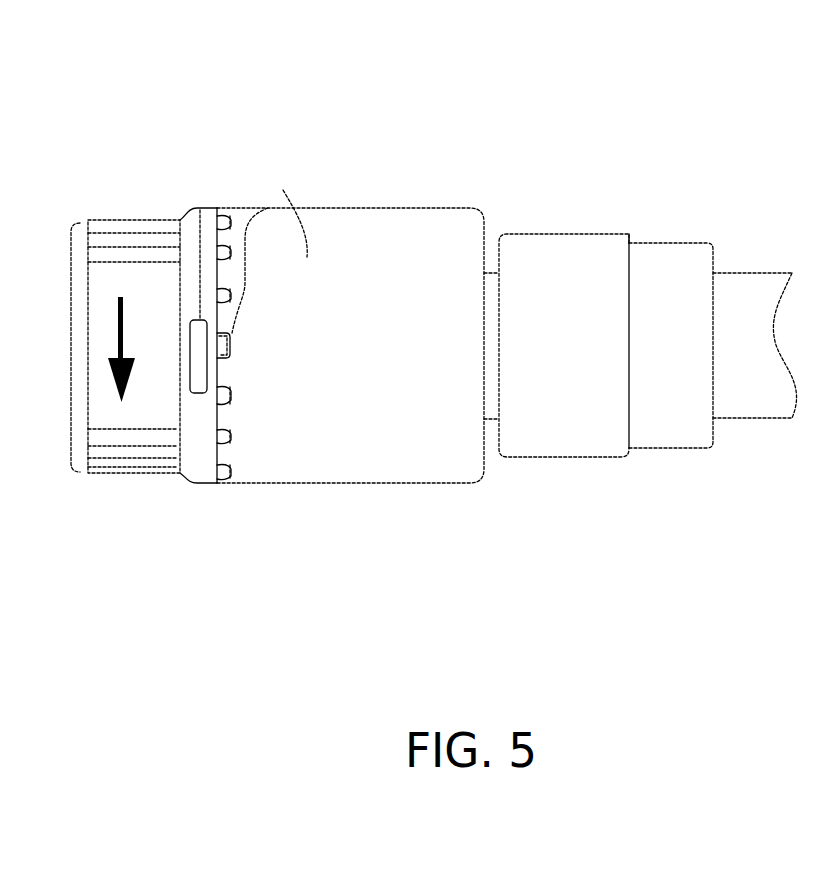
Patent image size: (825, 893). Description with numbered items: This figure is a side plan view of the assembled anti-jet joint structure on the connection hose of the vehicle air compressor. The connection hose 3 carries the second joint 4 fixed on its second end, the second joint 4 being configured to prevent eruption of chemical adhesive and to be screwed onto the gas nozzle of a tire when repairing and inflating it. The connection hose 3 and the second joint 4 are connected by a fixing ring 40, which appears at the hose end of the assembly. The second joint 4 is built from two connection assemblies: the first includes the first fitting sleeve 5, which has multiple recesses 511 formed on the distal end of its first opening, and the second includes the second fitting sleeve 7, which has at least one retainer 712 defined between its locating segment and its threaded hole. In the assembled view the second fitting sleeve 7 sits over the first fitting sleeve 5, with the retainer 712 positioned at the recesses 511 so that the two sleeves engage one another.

The second joint 4 is at (286, 99).
The second fitting sleeve 7 is at (130, 221).
The retainer 712 is at (215, 343).
The recesses 511 is at (223, 383).
The first fitting sleeve 5 is at (368, 470).
The fixing ring 40 is at (655, 423).
The connection hose 3 is at (765, 400).